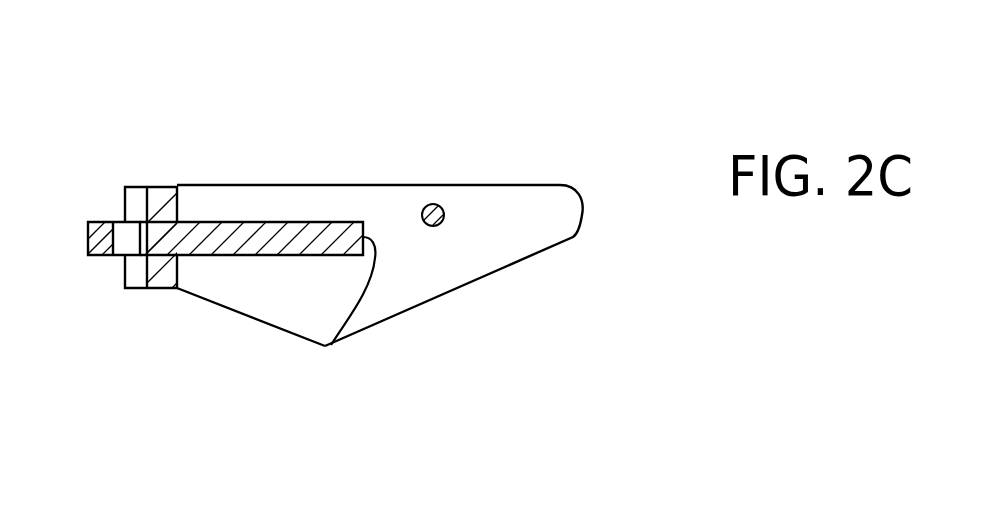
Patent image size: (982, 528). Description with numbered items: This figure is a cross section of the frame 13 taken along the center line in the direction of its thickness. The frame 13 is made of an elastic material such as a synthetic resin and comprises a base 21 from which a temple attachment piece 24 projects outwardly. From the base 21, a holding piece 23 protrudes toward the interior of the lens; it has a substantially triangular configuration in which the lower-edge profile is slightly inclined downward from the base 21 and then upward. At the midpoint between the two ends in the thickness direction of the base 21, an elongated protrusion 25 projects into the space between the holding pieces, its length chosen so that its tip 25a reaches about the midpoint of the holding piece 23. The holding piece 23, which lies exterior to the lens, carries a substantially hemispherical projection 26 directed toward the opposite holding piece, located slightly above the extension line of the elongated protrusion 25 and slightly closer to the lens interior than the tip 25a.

The frame 13 is at (593, 222).
The base 21 is at (157, 205).
The holding piece 23 is at (393, 298).
The temple attachment piece 24 is at (93, 223).
The elongated protrusion 25 is at (247, 247).
The tip 25a is at (331, 345).
The projection 26 is at (445, 225).